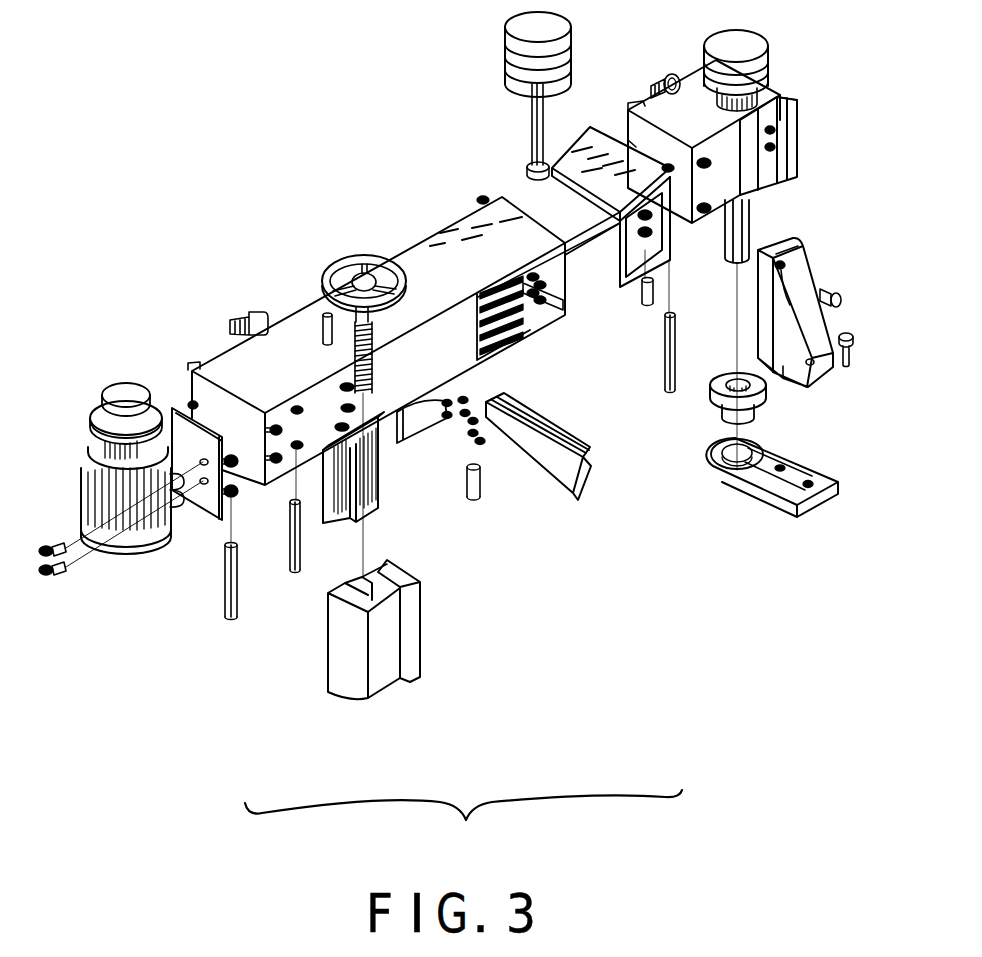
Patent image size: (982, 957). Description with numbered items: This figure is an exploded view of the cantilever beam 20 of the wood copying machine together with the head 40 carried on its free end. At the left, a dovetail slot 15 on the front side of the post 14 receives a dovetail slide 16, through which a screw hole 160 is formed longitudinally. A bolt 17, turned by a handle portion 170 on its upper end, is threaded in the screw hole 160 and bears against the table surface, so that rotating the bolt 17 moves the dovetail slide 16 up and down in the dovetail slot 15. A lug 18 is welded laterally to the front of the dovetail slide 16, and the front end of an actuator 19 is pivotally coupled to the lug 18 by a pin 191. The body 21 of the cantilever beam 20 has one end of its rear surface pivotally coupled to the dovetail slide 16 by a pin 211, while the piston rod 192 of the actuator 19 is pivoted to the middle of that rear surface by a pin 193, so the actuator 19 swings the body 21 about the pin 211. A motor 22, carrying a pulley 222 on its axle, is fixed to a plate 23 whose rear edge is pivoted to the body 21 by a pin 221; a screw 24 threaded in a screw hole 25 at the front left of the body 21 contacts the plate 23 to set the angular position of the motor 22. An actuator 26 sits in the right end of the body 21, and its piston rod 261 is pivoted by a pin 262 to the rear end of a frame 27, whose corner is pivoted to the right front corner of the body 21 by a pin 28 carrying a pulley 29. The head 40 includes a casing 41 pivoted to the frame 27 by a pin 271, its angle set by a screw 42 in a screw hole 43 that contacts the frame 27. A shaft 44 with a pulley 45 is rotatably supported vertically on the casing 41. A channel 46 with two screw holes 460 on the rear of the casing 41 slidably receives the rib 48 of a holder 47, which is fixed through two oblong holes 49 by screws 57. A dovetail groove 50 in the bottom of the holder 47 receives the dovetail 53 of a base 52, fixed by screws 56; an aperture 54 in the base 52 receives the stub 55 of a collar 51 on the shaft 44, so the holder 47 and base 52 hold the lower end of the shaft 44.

The post 14 is at (373, 629).
The dovetail slot 15 is at (350, 583).
The dovetail slide 16 is at (363, 484).
The screw hole 160 is at (421, 494).
The bolt 17 is at (373, 372).
The handle portion 170 is at (353, 255).
The lug 18 is at (427, 432).
The actuator 19 is at (547, 480).
The pin 191 is at (479, 497).
The piston rod 192 is at (482, 407).
The pin 193 is at (322, 332).
The cantilever beam 20 is at (421, 214).
The body 21 is at (288, 328).
The pin 211 is at (290, 530).
The motor 22 is at (137, 545).
The pin 221 is at (226, 616).
The pulley 222 is at (122, 393).
The plate 23 is at (215, 510).
The screw 24 is at (246, 318).
The screw hole 25 is at (192, 404).
The actuator 26 is at (507, 313).
The piston rod 261 is at (547, 296).
The pin 262 is at (647, 304).
The frame 27 is at (590, 128).
The pin 271 is at (671, 313).
The pin 28 is at (544, 140).
The pulley 29 is at (568, 48).
The head 40 is at (811, 163).
The casing 41 is at (688, 92).
The screw 42 is at (661, 77).
The screw hole 43 is at (632, 145).
The shaft 44 is at (730, 265).
The pulley 45 is at (766, 44).
The channel 46 is at (788, 130).
The screw holes 460 is at (778, 95).
The holder 47 is at (825, 234).
The rib 48 is at (787, 240).
The oblong holes 49 is at (786, 265).
The dovetail groove 50 is at (806, 308).
The collar 51 is at (743, 404).
The base 52 is at (763, 494).
The dovetail 53 is at (810, 490).
The aperture 54 is at (725, 473).
The stub 55 is at (722, 417).
The screws 56 is at (855, 342).
The screws 57 is at (840, 293).